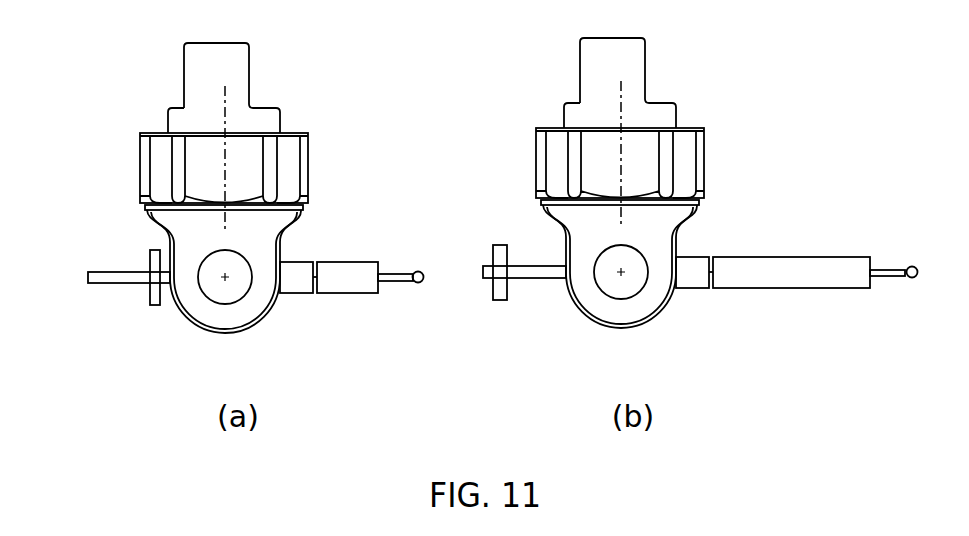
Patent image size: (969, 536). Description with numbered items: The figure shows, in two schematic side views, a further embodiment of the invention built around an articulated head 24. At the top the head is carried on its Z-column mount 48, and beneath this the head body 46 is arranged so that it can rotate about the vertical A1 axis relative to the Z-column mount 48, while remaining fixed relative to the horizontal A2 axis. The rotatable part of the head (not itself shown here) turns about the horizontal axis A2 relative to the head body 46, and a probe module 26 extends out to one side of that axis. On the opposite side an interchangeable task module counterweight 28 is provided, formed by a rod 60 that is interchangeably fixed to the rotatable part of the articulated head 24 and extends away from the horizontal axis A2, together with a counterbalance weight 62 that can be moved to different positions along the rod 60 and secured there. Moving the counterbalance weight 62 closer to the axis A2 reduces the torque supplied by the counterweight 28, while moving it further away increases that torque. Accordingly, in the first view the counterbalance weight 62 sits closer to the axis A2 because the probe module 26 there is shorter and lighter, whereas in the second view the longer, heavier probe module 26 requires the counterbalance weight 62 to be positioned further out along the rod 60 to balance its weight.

The articulated head 24 is at (437, 203).
The probe module 26 is at (364, 313).
The task module counterweight 28 is at (300, 306).
The head body 46 is at (398, 284).
The Z-column mount 48 is at (140, 180).
The rod 60 is at (122, 285).
The counterbalance weight 62 is at (155, 306).
The A1 axis A1 is at (423, 143).
The A2 axis A2 is at (228, 279).